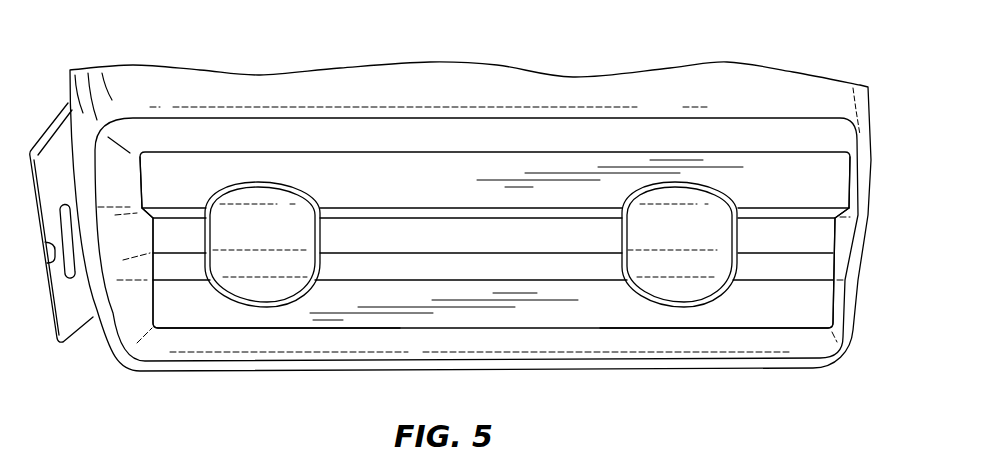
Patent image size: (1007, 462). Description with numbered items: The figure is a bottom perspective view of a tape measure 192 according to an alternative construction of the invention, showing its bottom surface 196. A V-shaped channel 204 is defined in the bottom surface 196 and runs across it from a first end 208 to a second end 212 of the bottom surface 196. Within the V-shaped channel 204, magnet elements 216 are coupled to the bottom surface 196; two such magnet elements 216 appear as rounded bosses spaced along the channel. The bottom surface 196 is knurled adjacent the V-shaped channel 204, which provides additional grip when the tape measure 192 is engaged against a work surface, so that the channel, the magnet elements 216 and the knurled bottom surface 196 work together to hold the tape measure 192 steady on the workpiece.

The tape measure 192 is at (583, 62).
The bottom surface 196 is at (482, 152).
The V-shaped channel 204 is at (370, 242).
The first end 208 is at (157, 303).
The second end 212 is at (827, 302).
The magnet elements 216 is at (737, 200).